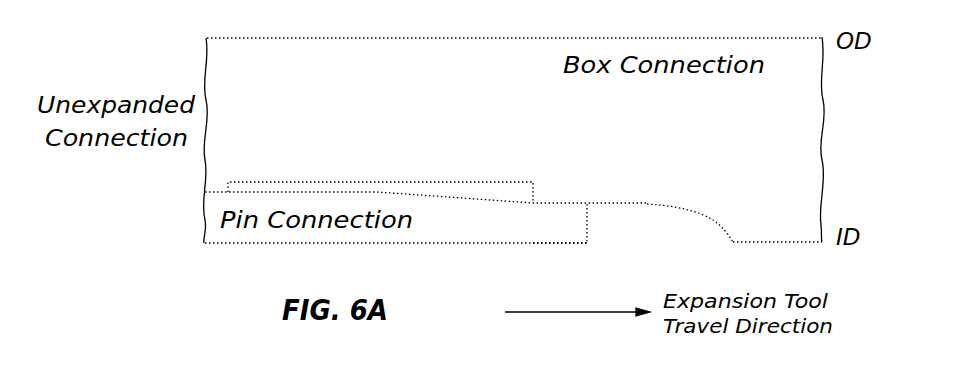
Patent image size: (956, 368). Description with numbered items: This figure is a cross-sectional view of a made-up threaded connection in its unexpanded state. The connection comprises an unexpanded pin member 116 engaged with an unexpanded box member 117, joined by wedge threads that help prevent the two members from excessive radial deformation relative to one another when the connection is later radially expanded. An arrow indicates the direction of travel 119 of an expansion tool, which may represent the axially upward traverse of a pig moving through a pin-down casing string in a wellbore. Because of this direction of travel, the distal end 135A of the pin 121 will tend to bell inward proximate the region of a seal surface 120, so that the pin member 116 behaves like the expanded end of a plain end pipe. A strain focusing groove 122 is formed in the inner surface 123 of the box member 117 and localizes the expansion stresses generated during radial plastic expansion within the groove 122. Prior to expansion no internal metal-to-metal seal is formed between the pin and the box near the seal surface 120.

The unexpanded pin member 116 is at (205, 220).
The unexpanded box member 117 is at (824, 99).
The direction of travel of an expansion tool 119 is at (568, 313).
The seal surface 120 is at (382, 195).
The pin 121 is at (542, 245).
The strain focusing groove 122 is at (488, 182).
The inner surface of the box member 123 is at (712, 220).
The distal end of the pin 135A is at (547, 223).